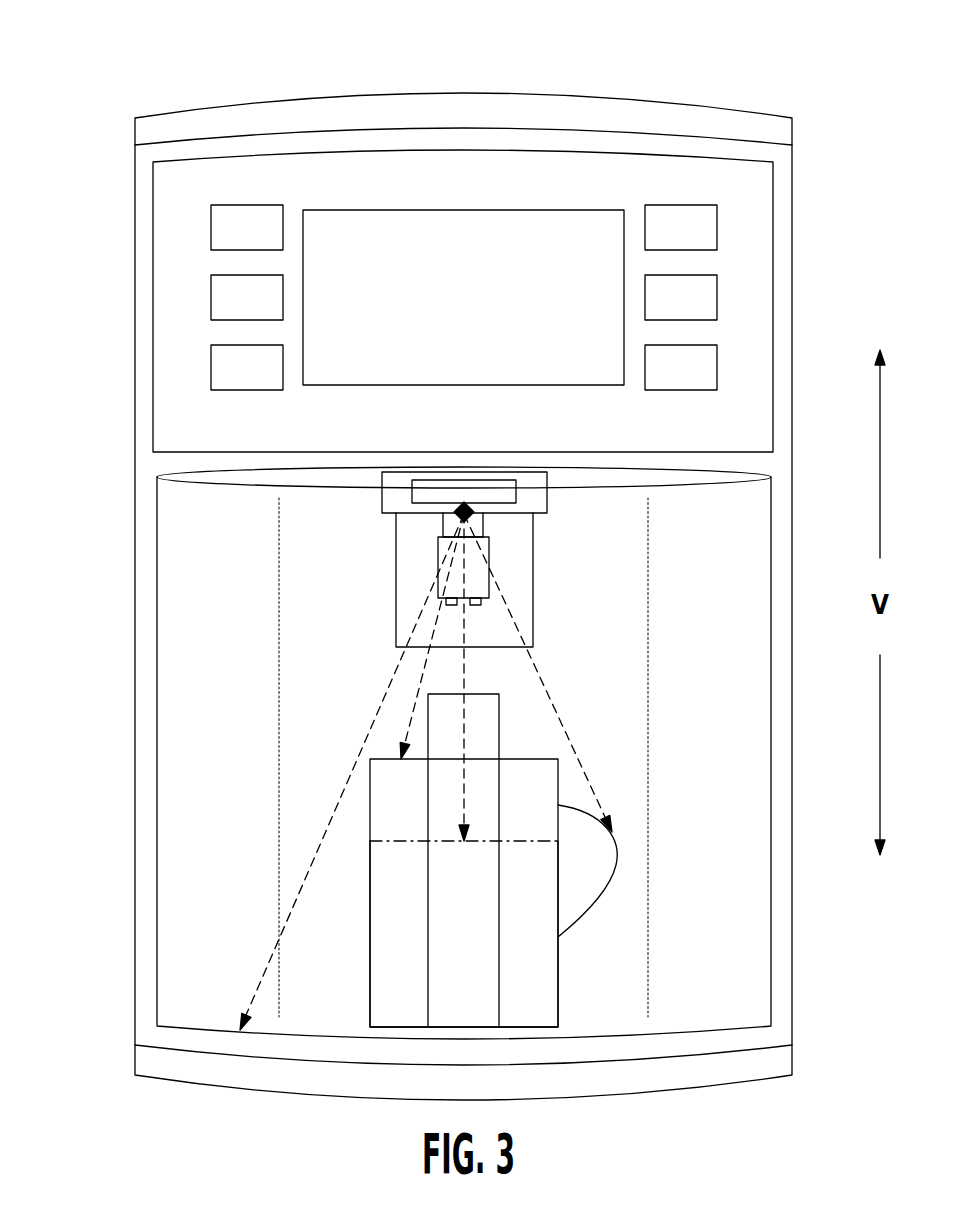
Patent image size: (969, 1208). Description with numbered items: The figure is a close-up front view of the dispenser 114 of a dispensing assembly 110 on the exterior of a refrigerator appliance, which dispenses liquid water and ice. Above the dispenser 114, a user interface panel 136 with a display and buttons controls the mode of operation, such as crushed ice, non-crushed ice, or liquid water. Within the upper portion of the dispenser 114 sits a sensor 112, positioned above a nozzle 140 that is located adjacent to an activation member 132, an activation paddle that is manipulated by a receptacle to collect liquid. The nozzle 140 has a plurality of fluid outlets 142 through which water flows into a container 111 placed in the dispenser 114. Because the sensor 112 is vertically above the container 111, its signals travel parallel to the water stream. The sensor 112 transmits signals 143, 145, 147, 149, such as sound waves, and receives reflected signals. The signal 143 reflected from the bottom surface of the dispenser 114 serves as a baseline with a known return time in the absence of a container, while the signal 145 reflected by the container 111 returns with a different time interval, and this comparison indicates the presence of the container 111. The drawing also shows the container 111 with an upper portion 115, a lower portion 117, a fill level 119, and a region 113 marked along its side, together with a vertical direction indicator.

The dispensing assembly 110 is at (84, 69).
The user interface panel 136 is at (178, 258).
The container 111 is at (370, 990).
The dispenser 114 is at (290, 957).
The sensor 112 is at (413, 490).
The activation member 132 is at (411, 591).
The nozzle 140 is at (483, 574).
The fluid outlets 142 is at (445, 618).
The signal 145 is at (413, 706).
The signal 143 is at (255, 991).
The signal 147 is at (465, 790).
The signal 149 is at (577, 748).
The container 115 is at (357, 759).
The container lower portion 117 is at (357, 884).
The fill level 119 is at (513, 843).
The fill region 113 is at (590, 905).